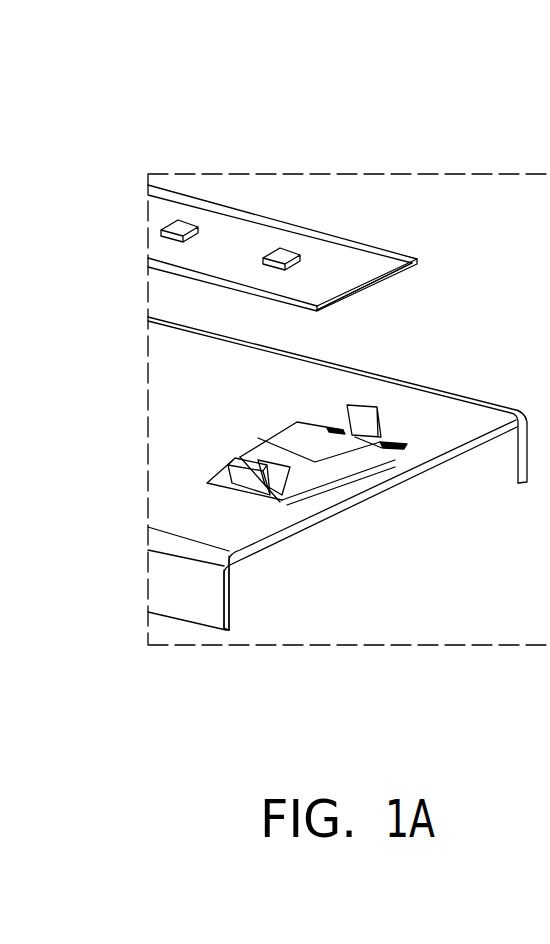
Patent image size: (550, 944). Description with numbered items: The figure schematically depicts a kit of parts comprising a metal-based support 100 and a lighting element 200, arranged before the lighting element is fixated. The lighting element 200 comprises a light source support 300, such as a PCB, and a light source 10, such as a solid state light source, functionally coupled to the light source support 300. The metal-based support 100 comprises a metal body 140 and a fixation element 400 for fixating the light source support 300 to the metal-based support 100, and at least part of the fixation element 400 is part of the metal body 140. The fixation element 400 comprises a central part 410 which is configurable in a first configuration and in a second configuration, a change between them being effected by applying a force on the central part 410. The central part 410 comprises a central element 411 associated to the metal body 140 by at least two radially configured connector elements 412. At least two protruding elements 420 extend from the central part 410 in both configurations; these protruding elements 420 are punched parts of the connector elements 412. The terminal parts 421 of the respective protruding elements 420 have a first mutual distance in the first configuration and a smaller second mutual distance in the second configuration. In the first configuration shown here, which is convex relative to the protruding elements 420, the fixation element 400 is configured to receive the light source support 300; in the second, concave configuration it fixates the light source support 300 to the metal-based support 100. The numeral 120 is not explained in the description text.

The lighting element 200 is at (241, 200).
The light source 10 is at (290, 246).
The light source support 300 is at (350, 272).
The metal-based support 100 is at (420, 348).
The metal body 140 is at (193, 583).
The fixation element 400 is at (295, 429).
The central element 411 is at (310, 436).
The protruding elements 420 is at (368, 406).
The terminal parts 421 is at (385, 412).
The central part 410 is at (339, 469).
The connector elements 412 is at (311, 488).
The opening 120 is at (240, 488).